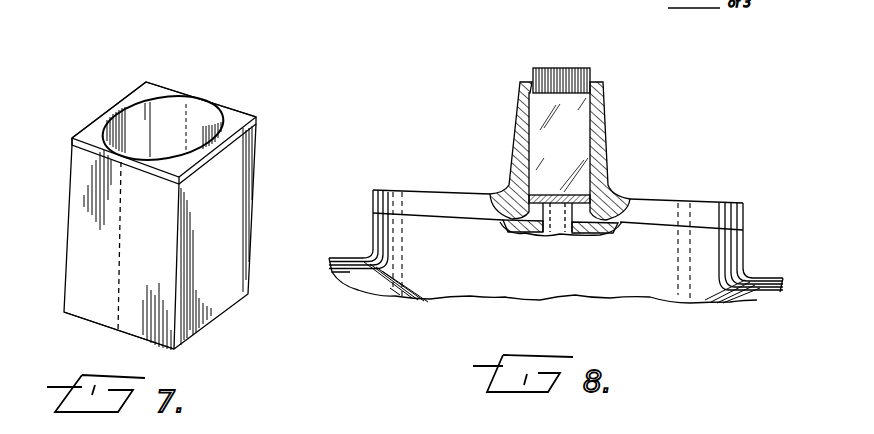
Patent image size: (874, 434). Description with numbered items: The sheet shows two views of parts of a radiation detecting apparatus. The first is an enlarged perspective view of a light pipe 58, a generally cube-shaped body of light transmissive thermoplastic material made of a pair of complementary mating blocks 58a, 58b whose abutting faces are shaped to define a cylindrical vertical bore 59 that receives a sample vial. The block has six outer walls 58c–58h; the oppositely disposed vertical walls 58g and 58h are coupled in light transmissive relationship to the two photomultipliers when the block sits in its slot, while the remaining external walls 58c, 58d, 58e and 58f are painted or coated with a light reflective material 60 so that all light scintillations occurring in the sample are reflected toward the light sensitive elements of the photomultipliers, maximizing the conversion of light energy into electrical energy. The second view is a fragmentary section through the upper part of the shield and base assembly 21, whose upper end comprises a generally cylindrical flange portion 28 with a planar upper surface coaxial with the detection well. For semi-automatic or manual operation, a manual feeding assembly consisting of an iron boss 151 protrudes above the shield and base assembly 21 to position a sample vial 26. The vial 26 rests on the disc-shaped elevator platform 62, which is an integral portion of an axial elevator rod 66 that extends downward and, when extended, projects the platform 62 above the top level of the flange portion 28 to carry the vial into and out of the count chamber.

In FIG. 7, the light pipe 58 is at (221, 299).
In FIG. 7, the mating block 58a is at (126, 97).
In FIG. 7, the mating block 58b is at (228, 113).
In FIG. 7, the outer wall 58c is at (80, 241).
In FIG. 7, the outer wall 58d is at (148, 92).
In FIG. 7, the outer wall 58e is at (258, 152).
In FIG. 7, the outer wall 58f is at (97, 324).
In FIG. 7, the vertical wall 58g is at (242, 233).
In FIG. 7, the vertical wall 58h is at (74, 135).
In FIG. 7, the cylindrical vertical bore 59 is at (167, 110).
In FIG. 7, the light reflective material 60 is at (261, 120).
In FIG. 8, the iron boss 151 is at (605, 120).
In FIG. 8, the sample vial 26 is at (570, 153).
In FIG. 8, the elevator platform 62 is at (572, 195).
In FIG. 8, the elevator rod 66 is at (557, 233).
In FIG. 8, the flange portion 28 is at (745, 256).
In FIG. 8, the shield and base assembly 21 is at (747, 298).